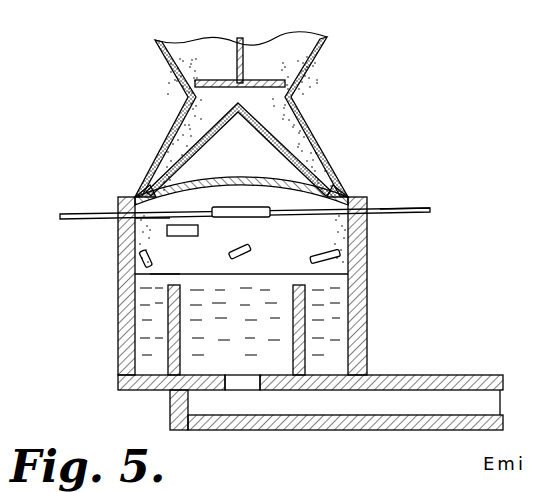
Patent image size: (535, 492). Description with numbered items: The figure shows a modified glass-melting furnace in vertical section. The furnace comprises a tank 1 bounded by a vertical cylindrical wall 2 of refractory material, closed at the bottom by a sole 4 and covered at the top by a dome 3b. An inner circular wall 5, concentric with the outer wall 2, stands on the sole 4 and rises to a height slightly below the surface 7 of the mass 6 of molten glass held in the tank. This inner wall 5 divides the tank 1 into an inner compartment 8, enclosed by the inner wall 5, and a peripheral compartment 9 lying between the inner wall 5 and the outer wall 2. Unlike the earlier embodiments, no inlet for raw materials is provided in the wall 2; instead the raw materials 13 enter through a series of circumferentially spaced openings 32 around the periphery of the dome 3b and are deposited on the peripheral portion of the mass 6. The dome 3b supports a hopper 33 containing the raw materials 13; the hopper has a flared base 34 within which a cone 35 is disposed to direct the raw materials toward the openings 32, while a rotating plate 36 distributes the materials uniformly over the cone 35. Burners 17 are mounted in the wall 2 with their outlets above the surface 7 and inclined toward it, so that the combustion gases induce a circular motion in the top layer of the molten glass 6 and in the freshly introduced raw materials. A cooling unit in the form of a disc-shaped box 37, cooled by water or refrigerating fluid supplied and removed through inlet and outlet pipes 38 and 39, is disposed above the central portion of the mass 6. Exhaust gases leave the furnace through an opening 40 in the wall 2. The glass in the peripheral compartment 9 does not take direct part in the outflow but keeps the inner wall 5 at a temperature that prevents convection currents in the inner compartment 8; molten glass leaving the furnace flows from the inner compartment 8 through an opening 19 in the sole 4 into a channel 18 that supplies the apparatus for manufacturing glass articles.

The tank 1 is at (367, 258).
The vertical cylindrical wall 2 is at (358, 282).
The dome 3b is at (193, 183).
The sole 4 is at (170, 389).
The inner circular wall 5 is at (180, 328).
The mass of molten glass 6 is at (240, 290).
The surface 7 is at (165, 275).
The inner compartment 8 is at (210, 371).
The peripheral compartment 9 is at (157, 371).
The raw materials 13 is at (283, 65).
The burners 17 is at (330, 254).
The channel 18 is at (430, 400).
The opening 19 is at (235, 385).
The openings 32 is at (137, 193).
The hopper 33 is at (168, 68).
The flared base 34 is at (305, 118).
The cone 35 is at (205, 140).
The rotating plate 36 is at (222, 80).
The disc-shaped box 37 is at (167, 222).
The inlet pipe 38 is at (405, 208).
The outlet pipe 39 is at (82, 214).
The opening 40 is at (198, 233).